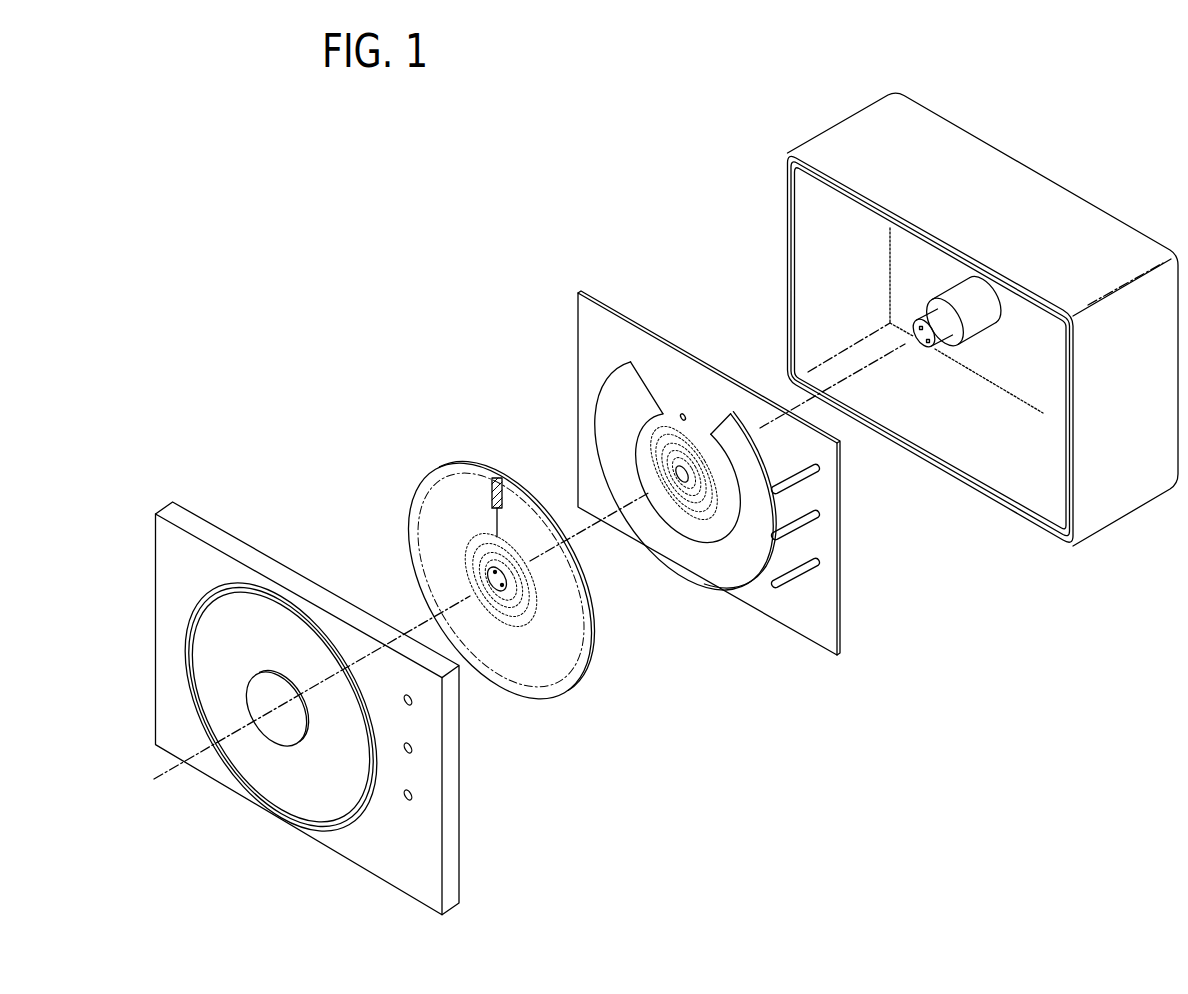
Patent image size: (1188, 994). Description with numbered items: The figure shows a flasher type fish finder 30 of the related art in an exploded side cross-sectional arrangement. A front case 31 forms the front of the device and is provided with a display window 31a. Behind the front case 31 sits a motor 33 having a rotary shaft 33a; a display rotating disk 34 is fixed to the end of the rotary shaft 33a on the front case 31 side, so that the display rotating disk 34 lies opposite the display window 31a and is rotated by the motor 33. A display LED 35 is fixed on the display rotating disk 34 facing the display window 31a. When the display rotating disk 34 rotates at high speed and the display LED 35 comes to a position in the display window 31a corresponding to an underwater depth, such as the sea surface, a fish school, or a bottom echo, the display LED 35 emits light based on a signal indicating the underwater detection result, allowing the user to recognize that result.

The flasher type fish finder 30 is at (1113, 134).
The front case 31 is at (347, 840).
The display window 31a is at (347, 788).
The motor 33 is at (986, 321).
The rotary shaft 33a is at (929, 348).
The display rotating disk 34 is at (565, 648).
The display LED 35 is at (490, 497).